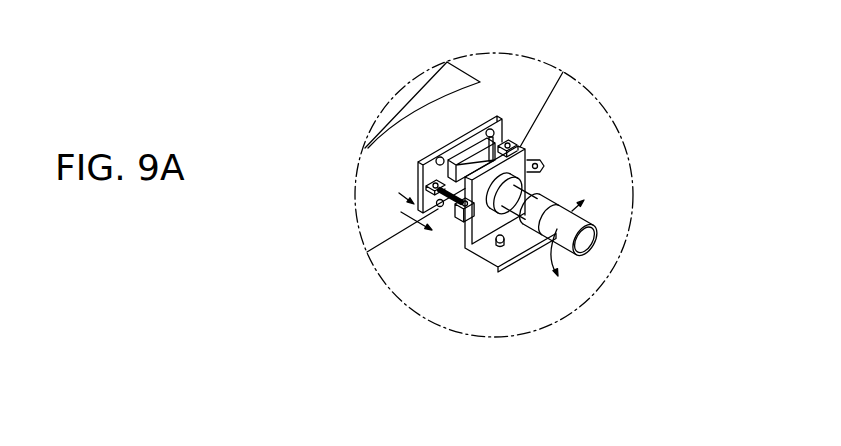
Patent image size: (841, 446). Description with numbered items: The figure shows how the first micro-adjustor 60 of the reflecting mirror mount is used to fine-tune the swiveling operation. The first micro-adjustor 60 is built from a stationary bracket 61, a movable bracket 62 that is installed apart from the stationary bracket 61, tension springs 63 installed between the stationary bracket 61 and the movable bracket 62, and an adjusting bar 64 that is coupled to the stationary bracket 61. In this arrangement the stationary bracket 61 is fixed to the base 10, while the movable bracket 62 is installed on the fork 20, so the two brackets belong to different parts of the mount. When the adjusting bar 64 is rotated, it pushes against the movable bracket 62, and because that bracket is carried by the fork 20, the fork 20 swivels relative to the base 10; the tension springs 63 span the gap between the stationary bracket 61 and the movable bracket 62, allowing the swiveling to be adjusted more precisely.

The base 10 is at (610, 175).
The fork 20 is at (533, 66).
The first micro-adjustor 60 is at (541, 152).
The stationary bracket 61 is at (510, 262).
The movable bracket 62 is at (449, 141).
The tension springs 63 is at (447, 208).
The adjusting bar 64 is at (590, 240).